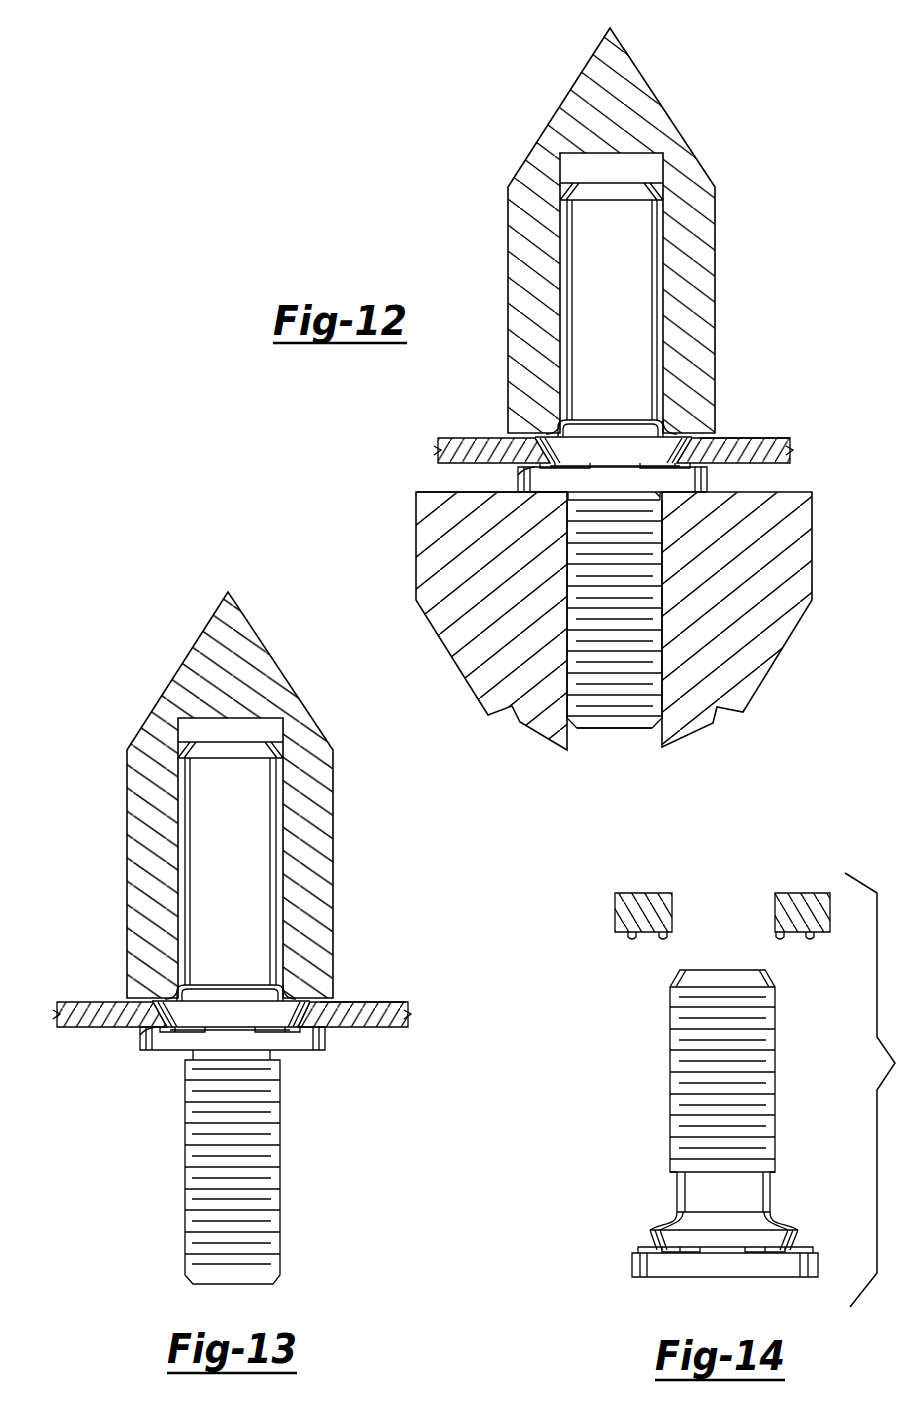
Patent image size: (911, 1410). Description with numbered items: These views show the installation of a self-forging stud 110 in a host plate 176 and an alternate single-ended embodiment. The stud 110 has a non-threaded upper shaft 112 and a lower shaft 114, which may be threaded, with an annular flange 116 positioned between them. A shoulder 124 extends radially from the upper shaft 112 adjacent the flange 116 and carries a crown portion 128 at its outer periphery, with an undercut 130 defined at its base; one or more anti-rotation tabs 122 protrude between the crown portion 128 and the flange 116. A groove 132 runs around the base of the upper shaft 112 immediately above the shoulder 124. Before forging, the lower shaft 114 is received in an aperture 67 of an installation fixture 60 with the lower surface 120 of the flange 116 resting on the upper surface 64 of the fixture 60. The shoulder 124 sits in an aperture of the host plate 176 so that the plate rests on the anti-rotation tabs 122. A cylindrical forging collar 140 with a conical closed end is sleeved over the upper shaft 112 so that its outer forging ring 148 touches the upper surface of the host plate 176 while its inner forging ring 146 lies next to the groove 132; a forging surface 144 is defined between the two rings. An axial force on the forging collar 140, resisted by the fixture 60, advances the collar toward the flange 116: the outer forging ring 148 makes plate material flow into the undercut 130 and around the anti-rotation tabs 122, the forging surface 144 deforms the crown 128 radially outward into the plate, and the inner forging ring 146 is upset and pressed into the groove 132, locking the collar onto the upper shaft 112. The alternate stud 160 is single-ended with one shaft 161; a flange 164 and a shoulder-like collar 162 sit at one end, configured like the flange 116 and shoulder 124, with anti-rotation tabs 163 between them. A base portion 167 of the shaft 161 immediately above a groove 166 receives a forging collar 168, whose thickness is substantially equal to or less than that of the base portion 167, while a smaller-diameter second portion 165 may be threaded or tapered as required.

In FIG. 12, the installation fixture 60 is at (452, 640).
In FIG. 12, the upper surface of installation fixture 64 is at (416, 492).
In FIG. 12, the aperture of installation fixture 67 is at (574, 764).
In FIG. 12, the self-forging stud 110 is at (648, 649).
In FIG. 13, the self-forging stud 110 is at (221, 1172).
In FIG. 12, the upper shaft 112 is at (613, 192).
In FIG. 13, the upper shaft 112 is at (222, 745).
In FIG. 12, the lower shaft 114 is at (604, 730).
In FIG. 13, the lower shaft 114 is at (281, 1150).
In FIG. 12, the annular flange 116 is at (710, 480).
In FIG. 13, the annular flange 116 is at (134, 1046).
In FIG. 12, the lower surface of flange 120 is at (664, 494).
In FIG. 12, the anti-rotation tabs 122 is at (528, 463).
In FIG. 13, the anti-rotation tabs 122 is at (302, 1022).
In FIG. 12, the shoulder 124 is at (686, 438).
In FIG. 13, the shoulder 124 is at (302, 1001).
In FIG. 12, the crown portion 128 is at (522, 433).
In FIG. 13, the crown portion 128 is at (142, 1002).
In FIG. 12, the undercut 130 is at (700, 465).
In FIG. 13, the undercut 130 is at (160, 1027).
In FIG. 12, the groove 132 is at (606, 422).
In FIG. 13, the groove 132 is at (236, 997).
In FIG. 12, the forging collar 140 is at (504, 248).
In FIG. 13, the forging collar 140 is at (124, 830).
In FIG. 12, the forging surface 144 is at (684, 430).
In FIG. 13, the forging surface 144 is at (296, 995).
In FIG. 12, the inner forging ring 146 is at (548, 430).
In FIG. 13, the inner forging ring 146 is at (162, 994).
In FIG. 12, the outer forging ring 148 is at (716, 434).
In FIG. 13, the outer forging ring 148 is at (336, 1000).
In FIG. 12, the host plate 176 is at (772, 436).
In FIG. 13, the host plate 176 is at (382, 1024).
In FIG. 14, the stud 160 is at (676, 1143).
In FIG. 14, the shaft 161 is at (728, 1091).
In FIG. 14, the collar 162 is at (672, 1222).
In FIG. 14, the anti-rotation tabs 163 is at (650, 1243).
In FIG. 14, the flange 164 is at (634, 1262).
In FIG. 14, the second portion of shaft 165 is at (769, 1062).
In FIG. 14, the groove 166 is at (684, 1222).
In FIG. 14, the base portion of shaft 167 is at (771, 1193).
In FIG. 14, the forging collar 168 is at (614, 920).